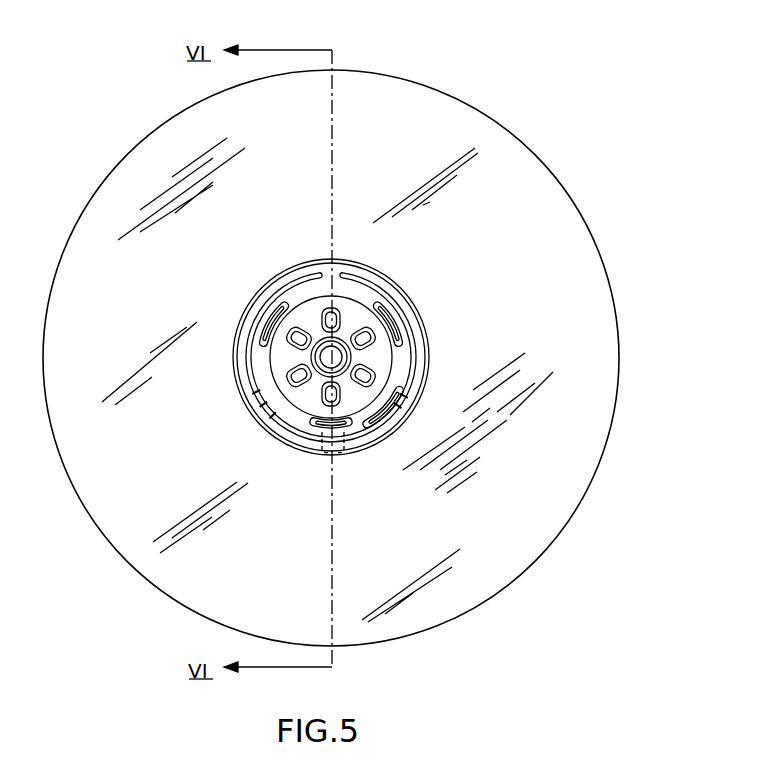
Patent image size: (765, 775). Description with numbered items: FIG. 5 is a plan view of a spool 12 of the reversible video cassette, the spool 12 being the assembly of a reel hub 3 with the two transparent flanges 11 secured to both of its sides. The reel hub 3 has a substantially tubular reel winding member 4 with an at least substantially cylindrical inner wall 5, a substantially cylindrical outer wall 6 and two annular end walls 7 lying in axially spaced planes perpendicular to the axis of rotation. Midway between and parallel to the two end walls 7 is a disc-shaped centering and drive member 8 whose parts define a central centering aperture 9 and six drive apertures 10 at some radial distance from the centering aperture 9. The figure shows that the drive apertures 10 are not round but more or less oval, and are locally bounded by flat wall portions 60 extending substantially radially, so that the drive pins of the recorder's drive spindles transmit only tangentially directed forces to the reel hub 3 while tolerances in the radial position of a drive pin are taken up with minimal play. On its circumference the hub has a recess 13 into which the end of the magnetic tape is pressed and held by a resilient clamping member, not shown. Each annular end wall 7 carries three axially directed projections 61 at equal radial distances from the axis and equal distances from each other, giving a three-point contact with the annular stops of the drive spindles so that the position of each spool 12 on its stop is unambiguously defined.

The reel hub 3 is at (430, 322).
The reel winding member 4 is at (246, 374).
The inner wall 5 is at (300, 310).
The outer wall 6 is at (428, 379).
The annular end wall 7 is at (287, 408).
The centering and drive member 8 is at (357, 313).
The centering aperture 9 is at (375, 318).
The drive apertures 10 is at (289, 384).
The transparent flange 11 is at (533, 188).
The spool 12 is at (595, 220).
The recess 13 is at (325, 438).
The flat wall portions 60 is at (293, 365).
The axially directed projections 61 is at (270, 322).